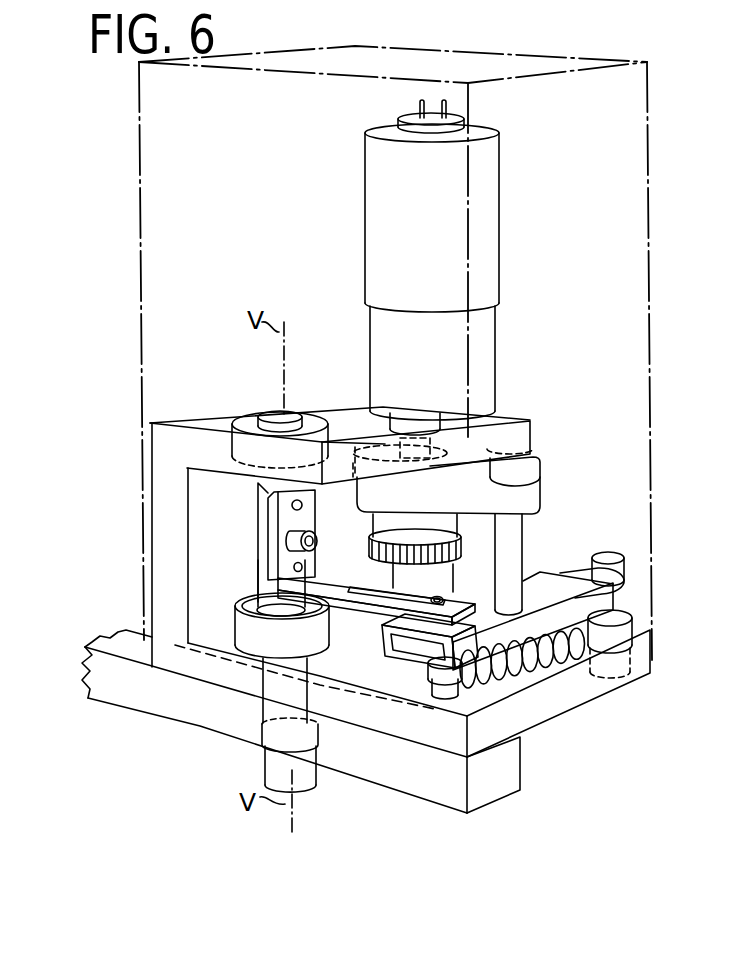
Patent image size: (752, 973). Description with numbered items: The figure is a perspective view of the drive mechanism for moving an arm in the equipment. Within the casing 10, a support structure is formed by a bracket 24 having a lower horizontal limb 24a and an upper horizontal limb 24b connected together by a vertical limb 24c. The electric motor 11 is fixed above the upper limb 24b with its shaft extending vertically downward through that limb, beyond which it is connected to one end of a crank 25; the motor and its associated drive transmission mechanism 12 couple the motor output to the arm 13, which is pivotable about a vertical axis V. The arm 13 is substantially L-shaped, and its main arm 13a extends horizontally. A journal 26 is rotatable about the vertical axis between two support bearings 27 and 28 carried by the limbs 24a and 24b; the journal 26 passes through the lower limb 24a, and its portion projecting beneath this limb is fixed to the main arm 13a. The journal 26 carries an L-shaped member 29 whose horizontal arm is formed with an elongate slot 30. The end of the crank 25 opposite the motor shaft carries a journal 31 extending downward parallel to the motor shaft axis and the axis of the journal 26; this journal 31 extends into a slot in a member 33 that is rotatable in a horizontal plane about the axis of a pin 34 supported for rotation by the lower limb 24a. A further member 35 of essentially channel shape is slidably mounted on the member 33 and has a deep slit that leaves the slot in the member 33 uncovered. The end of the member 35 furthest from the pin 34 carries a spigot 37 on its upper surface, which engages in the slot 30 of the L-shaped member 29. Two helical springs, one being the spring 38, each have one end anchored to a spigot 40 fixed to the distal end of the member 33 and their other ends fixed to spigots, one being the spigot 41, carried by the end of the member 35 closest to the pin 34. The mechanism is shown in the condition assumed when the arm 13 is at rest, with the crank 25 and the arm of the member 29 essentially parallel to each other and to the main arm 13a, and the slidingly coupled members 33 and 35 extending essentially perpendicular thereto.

The casing 10 is at (141, 176).
The electric motor 11 is at (383, 186).
The drive transmission mechanism 12 is at (589, 493).
The arm 13 is at (124, 716).
The main arm 13a is at (172, 713).
The bracket 24 is at (338, 563).
The lower horizontal limb 24a is at (515, 692).
The upper horizontal limb 24b is at (342, 412).
The vertical limb 24c is at (190, 570).
The crank 25 is at (474, 480).
The journal 26 is at (265, 528).
The support bearing 27 is at (252, 612).
The support bearing 28 is at (247, 416).
The L-shaped member 29 is at (316, 541).
The elongate slot 30 is at (375, 580).
The journal 31 is at (520, 541).
The member 33 is at (618, 547).
The pin 34 is at (636, 614).
The channel-shaped member 35 is at (632, 587).
The spigot 37 is at (443, 601).
The helical spring 38 is at (520, 690).
The spigot 40 is at (440, 698).
The spigot 41 is at (600, 677).